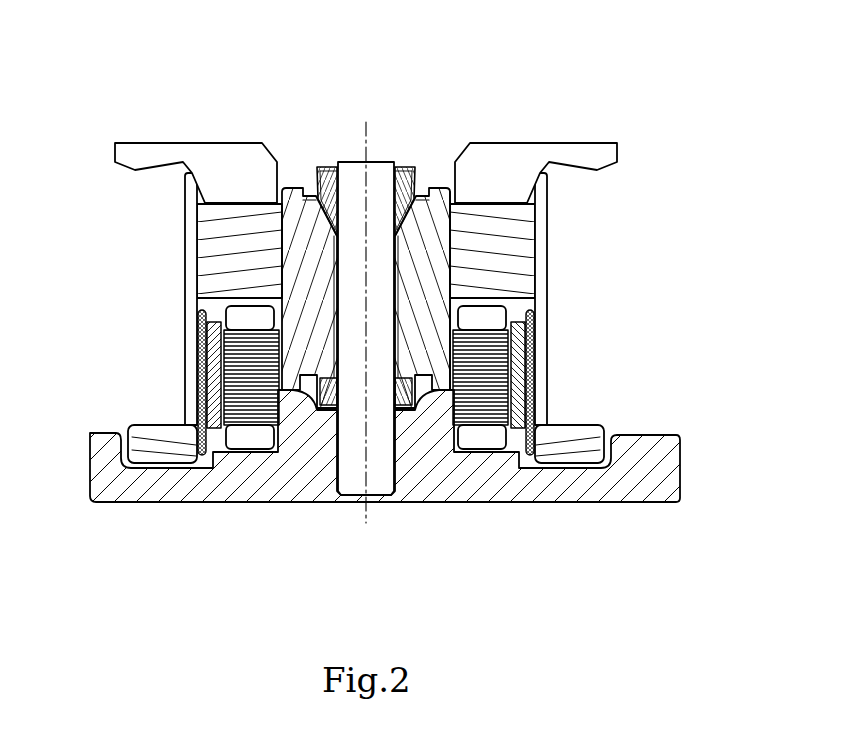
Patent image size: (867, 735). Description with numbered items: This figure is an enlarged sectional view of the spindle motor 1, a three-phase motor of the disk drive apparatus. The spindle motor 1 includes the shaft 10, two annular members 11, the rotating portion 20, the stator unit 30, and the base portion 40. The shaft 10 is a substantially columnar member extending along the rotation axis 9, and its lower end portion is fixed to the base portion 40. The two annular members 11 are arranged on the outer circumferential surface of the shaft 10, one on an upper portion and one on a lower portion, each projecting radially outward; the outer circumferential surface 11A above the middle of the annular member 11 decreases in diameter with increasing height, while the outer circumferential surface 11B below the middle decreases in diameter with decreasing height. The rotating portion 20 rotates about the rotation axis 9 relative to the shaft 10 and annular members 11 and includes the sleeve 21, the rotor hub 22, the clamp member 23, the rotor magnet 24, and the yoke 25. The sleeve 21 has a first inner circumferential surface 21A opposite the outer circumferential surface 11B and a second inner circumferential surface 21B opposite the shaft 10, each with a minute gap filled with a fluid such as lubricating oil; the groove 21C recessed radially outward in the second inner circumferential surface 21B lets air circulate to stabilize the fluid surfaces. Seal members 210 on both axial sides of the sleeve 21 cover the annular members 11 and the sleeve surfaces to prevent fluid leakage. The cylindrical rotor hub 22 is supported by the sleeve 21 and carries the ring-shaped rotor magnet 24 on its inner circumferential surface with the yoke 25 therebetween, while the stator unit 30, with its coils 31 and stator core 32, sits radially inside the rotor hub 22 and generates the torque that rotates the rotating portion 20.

The spindle motor 1 is at (424, 64).
The rotation axis 9 is at (367, 521).
The shaft 10 is at (355, 487).
The annular member 11 is at (409, 167).
The outer circumferential surface 11A is at (418, 186).
The outer circumferential surface 11B is at (462, 200).
The rotating portion 20 is at (578, 126).
The sleeve 21 is at (287, 196).
The first inner circumferential surface 21A is at (325, 174).
The second inner circumferential surface 21B is at (447, 227).
The groove 21C is at (447, 275).
The rotor hub 22 is at (194, 227).
The clamp member 23 is at (131, 148).
The rotor magnet 24 is at (192, 334).
The yoke 25 is at (199, 356).
The stator unit 30 is at (228, 449).
The coil 31 is at (241, 311).
The stator core 32 is at (223, 317).
The base portion 40 is at (663, 441).
The seal member 210 is at (418, 212).